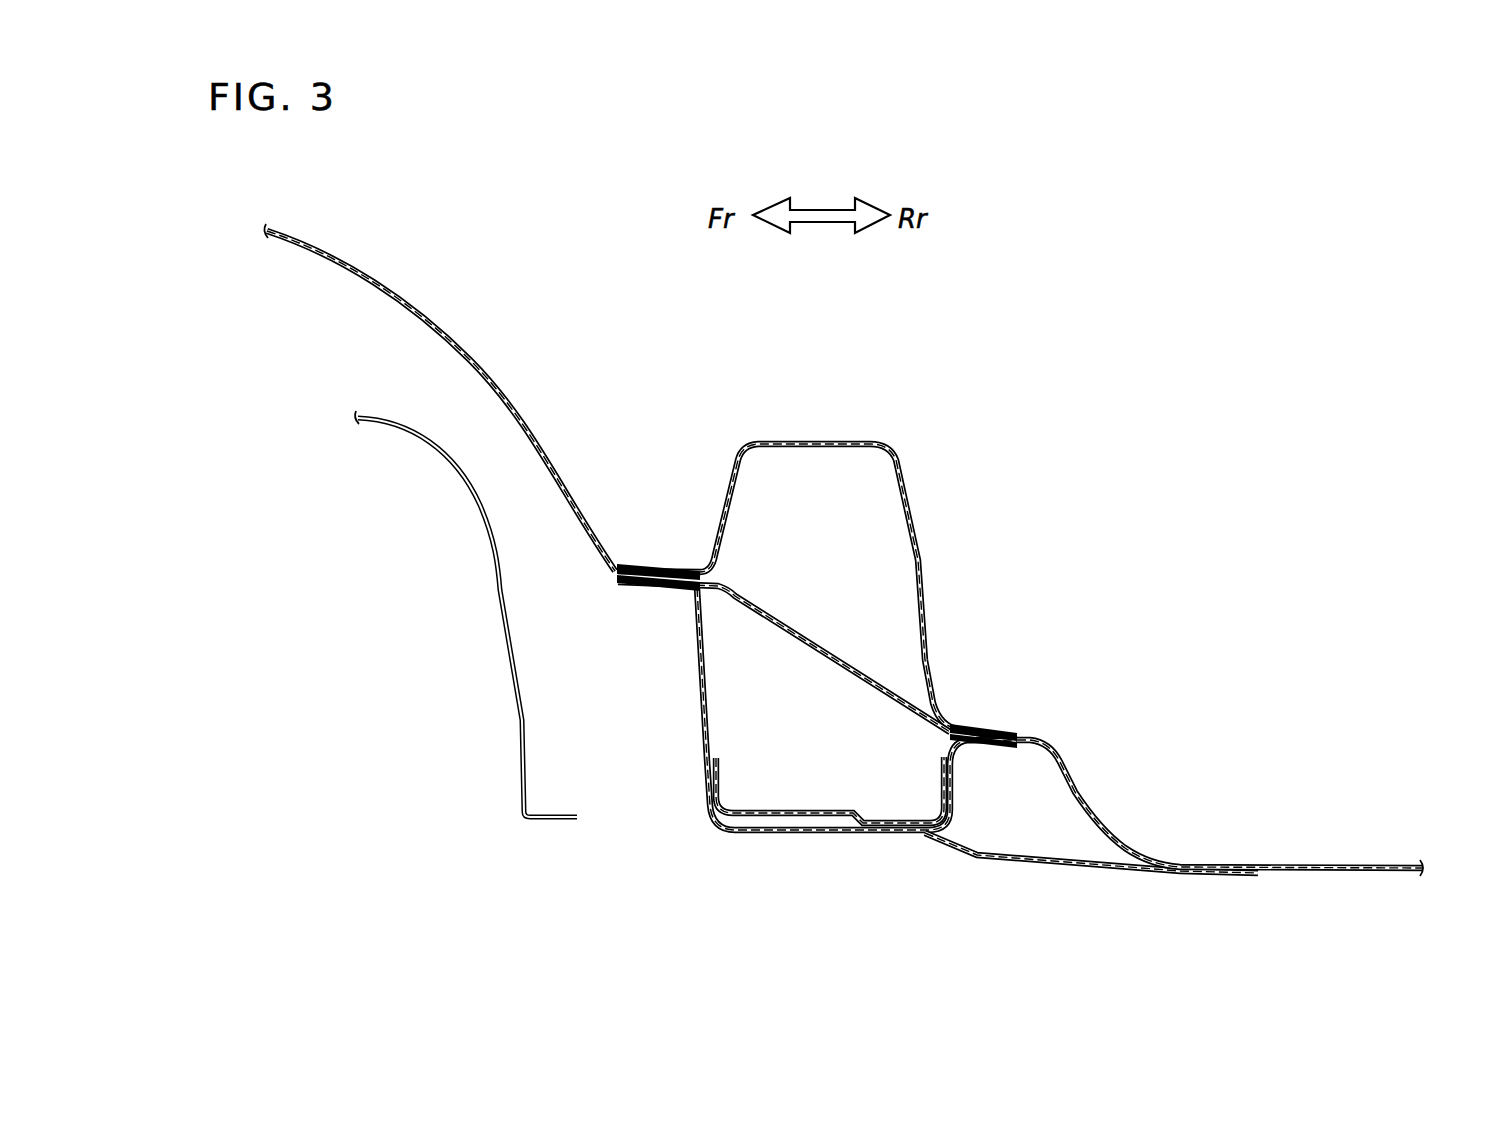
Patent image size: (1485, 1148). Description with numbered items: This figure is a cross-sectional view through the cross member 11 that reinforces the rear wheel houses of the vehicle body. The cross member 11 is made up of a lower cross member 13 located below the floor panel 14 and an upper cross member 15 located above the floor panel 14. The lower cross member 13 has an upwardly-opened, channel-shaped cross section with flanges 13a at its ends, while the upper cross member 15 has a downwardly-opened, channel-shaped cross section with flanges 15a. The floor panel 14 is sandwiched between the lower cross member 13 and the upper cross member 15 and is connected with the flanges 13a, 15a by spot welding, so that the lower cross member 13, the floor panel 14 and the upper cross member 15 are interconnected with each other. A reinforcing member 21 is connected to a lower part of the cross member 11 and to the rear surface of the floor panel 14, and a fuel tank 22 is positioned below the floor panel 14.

The cross member 11 is at (742, 845).
The lower cross member 13 is at (805, 832).
The flanges of lower cross member 13a is at (627, 592).
The floor panel 14 is at (1080, 787).
The upper cross member 15 is at (916, 513).
The flanges of upper cross member 15a is at (632, 565).
The reinforcing member 21 is at (1052, 868).
The fuel tank 22 is at (518, 770).